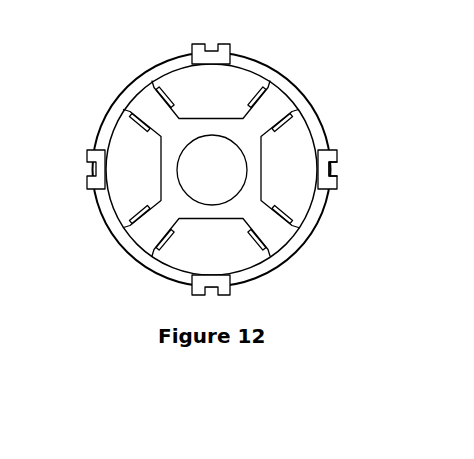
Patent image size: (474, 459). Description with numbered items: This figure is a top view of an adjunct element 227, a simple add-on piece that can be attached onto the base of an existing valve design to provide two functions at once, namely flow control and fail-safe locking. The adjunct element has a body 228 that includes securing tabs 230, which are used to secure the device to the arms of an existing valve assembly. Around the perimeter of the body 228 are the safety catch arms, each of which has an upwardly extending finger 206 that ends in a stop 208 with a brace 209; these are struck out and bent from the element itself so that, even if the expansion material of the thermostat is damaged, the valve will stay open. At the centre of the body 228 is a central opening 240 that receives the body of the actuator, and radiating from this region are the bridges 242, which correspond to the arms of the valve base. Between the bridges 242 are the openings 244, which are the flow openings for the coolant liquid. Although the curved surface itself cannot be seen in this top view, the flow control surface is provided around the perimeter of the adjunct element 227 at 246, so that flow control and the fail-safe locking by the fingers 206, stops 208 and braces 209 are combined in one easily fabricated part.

The adjunct element 227 is at (240, 159).
The flow control surface 246 is at (157, 69).
The bridges 242 is at (267, 225).
The finger 206 is at (240, 163).
The stop 208 is at (335, 190).
The brace 209 is at (338, 166).
The securing tabs 230 is at (211, 107).
The body 228 is at (174, 110).
The openings 244 is at (152, 185).
The central opening 240 is at (212, 170).